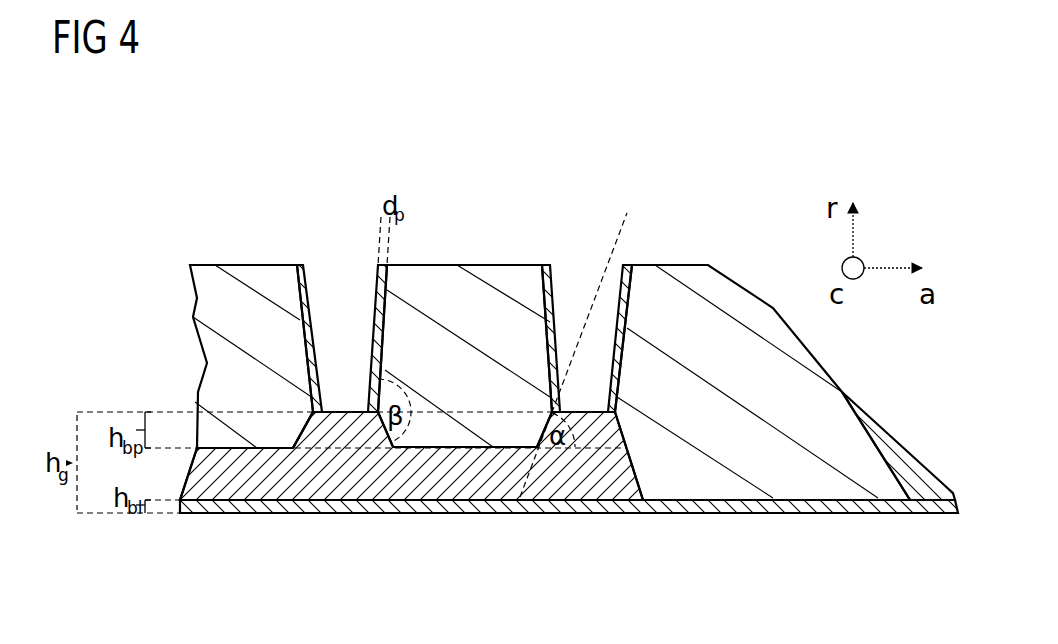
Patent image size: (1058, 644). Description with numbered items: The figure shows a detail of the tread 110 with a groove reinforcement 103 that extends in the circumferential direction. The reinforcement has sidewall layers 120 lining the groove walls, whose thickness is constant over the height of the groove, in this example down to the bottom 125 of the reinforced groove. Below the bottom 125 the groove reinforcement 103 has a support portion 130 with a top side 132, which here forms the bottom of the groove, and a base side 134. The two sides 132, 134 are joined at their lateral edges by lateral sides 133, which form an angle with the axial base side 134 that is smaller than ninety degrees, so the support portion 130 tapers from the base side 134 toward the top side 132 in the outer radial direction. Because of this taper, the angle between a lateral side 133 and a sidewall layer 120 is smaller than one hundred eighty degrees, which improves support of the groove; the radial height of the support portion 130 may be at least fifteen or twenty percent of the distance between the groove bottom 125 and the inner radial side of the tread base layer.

The groove reinforcement 103 is at (478, 480).
The tread 110 is at (453, 250).
The sidewall layer 120 is at (307, 286).
The bottom of the reinforced groove 125 is at (338, 409).
The support portion 130 is at (323, 454).
The top side 132 is at (362, 411).
The lateral side 133 is at (302, 427).
The base side 134 is at (380, 450).